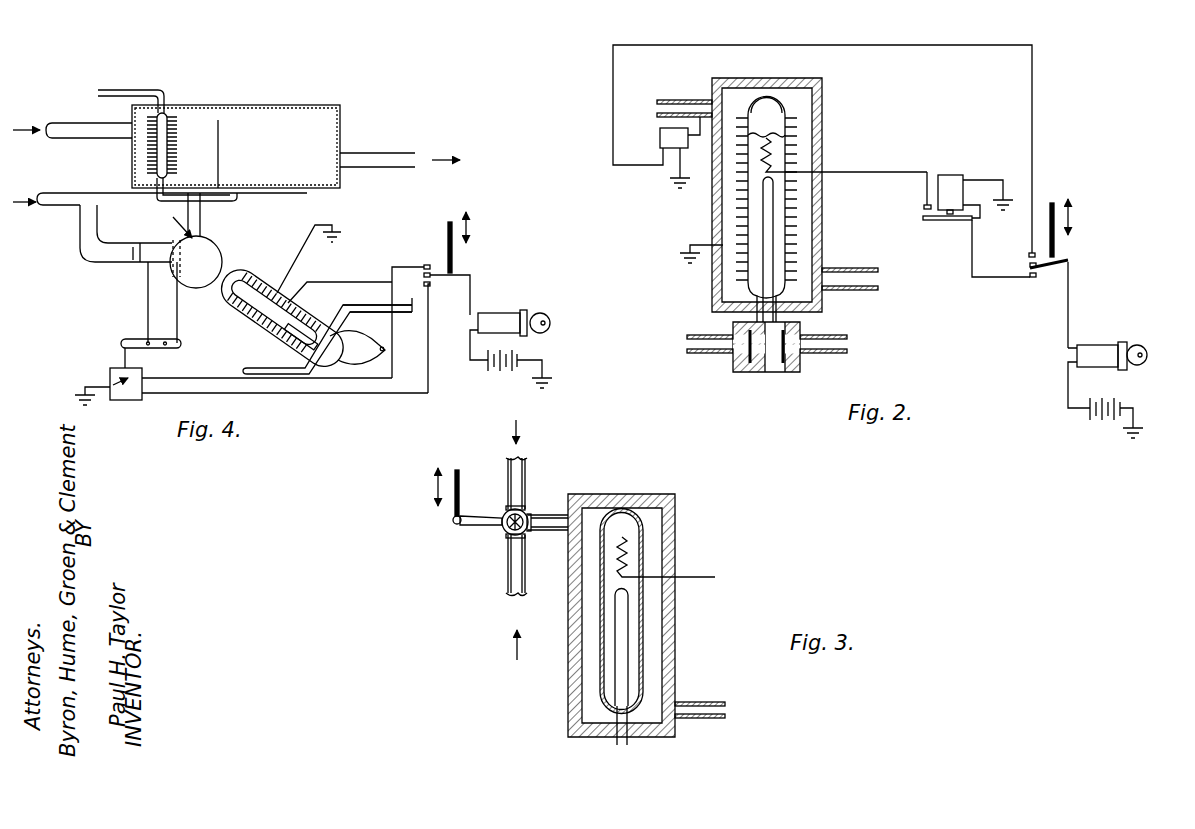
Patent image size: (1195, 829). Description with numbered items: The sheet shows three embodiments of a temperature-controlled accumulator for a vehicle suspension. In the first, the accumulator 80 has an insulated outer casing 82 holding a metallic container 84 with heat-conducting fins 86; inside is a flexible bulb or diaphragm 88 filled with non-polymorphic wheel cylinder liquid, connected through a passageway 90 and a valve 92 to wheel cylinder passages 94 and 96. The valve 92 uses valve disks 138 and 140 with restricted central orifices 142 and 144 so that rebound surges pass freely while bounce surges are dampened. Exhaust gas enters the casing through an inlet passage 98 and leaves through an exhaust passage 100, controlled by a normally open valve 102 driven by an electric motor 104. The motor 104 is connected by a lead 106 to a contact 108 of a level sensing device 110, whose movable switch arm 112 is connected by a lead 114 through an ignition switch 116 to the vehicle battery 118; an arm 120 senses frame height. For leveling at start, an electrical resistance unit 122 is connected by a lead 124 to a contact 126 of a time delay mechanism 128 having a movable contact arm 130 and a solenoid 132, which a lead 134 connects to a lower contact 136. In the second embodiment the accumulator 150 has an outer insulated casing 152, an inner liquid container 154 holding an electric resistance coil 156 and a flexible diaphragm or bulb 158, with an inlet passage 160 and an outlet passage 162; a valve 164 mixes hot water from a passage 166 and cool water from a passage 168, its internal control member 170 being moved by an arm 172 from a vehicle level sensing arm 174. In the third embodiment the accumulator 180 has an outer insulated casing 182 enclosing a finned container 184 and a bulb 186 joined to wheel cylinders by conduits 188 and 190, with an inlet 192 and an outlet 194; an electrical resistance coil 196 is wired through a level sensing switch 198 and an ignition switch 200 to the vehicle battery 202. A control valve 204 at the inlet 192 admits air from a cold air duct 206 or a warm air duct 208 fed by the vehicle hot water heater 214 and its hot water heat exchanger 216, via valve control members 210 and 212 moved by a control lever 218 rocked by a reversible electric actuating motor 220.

In FIG. 2, the accumulator 80 is at (797, 184).
In FIG. 2, the insulated outer casing 82 is at (822, 102).
In FIG. 2, the container 84 is at (784, 92).
In FIG. 2, the fins 86 is at (748, 92).
In FIG. 2, the flexible bulb or diaphragm 88 is at (765, 218).
In FIG. 2, the passageway 90 is at (745, 292).
In FIG. 2, the valve 92 is at (772, 368).
In FIG. 2, the wheel cylinder passage 94 is at (840, 353).
In FIG. 2, the wheel cylinder passage 96 is at (690, 353).
In FIG. 2, the inlet passage 98 is at (655, 98).
In FIG. 2, the exhaust passage 100 is at (880, 280).
In FIG. 2, the valve 102 is at (690, 100).
In FIG. 2, the electric motor 104 is at (668, 140).
In FIG. 2, the lead 106 is at (912, 50).
In FIG. 2, the contact 108 is at (1028, 255).
In FIG. 2, the level sensing device 110 is at (1112, 207).
In FIG. 2, the movable switch arm 112 is at (1043, 302).
In FIG. 2, the lead 114 is at (1107, 348).
In FIG. 2, the ignition switch 116 is at (1098, 352).
In FIG. 2, the vehicle battery 118 is at (1100, 428).
In FIG. 2, the arm 120 is at (1052, 200).
In FIG. 2, the electrical resistance unit 122 is at (788, 148).
In FIG. 2, the lead 124 is at (910, 172).
In FIG. 2, the contact 126 is at (923, 207).
In FIG. 2, the time delay mechanism 128 is at (974, 156).
In FIG. 2, the movable contact arm 130 is at (930, 222).
In FIG. 2, the solenoid 132 is at (952, 182).
In FIG. 2, the lead 134 is at (972, 282).
In FIG. 2, the contact 136 is at (1030, 278).
In FIG. 2, the valve disk 138 is at (750, 370).
In FIG. 2, the valve disk 140 is at (783, 372).
In FIG. 2, the restricted central orifice 142 is at (733, 330).
In FIG. 2, the restricted central orifice 144 is at (800, 330).
In FIG. 3, the accumulator 150 is at (620, 592).
In FIG. 3, the outer insulated casing 152 is at (670, 628).
In FIG. 3, the inner liquid container 154 is at (600, 676).
In FIG. 3, the electric resistance coil 156 is at (632, 540).
In FIG. 3, the flexible diaphragm or bulb 158 is at (622, 616).
In FIG. 3, the inlet passage 160 is at (552, 512).
In FIG. 3, the outlet passage 162 is at (705, 718).
In FIG. 3, the valve 164 is at (473, 508).
In FIG. 3, the passage 166 is at (524, 468).
In FIG. 3, the passage 168 is at (510, 580).
In FIG. 3, the internal control member 170 is at (506, 511).
In FIG. 3, the arm 172 is at (451, 498).
In FIG. 3, the vehicle level sensing arm 174 is at (456, 470).
In FIG. 4, the accumulator 180 is at (278, 307).
In FIG. 4, the outer insulated casing 182 is at (273, 312).
In FIG. 4, the finned container 184 is at (248, 255).
In FIG. 4, the flexible diaphragm or bulb 186 is at (301, 337).
In FIG. 4, the conduit 188 is at (290, 368).
In FIG. 4, the conduit 190 is at (353, 307).
In FIG. 4, the inlet 192 is at (208, 290).
In FIG. 4, the outlet 194 is at (384, 353).
In FIG. 4, the electrical resistance coil 196 is at (300, 288).
In FIG. 4, the level sensing switch 198 is at (481, 262).
In FIG. 4, the ignition switch 200 is at (500, 322).
In FIG. 4, the vehicle battery 202 is at (512, 380).
In FIG. 4, the control valve 204 is at (160, 246).
In FIG. 4, the cold air duct 206 is at (97, 242).
In FIG. 4, the warm air duct 208 is at (205, 217).
In FIG. 4, the valve control member 210 is at (147, 277).
In FIG. 4, the valve control member 212 is at (174, 218).
In FIG. 4, the vehicle hot water heater 214 is at (295, 98).
In FIG. 4, the hot water heat exchanger 216 is at (184, 118).
In FIG. 4, the control lever 218 is at (130, 340).
In FIG. 4, the electric actuating motor 220 is at (110, 378).